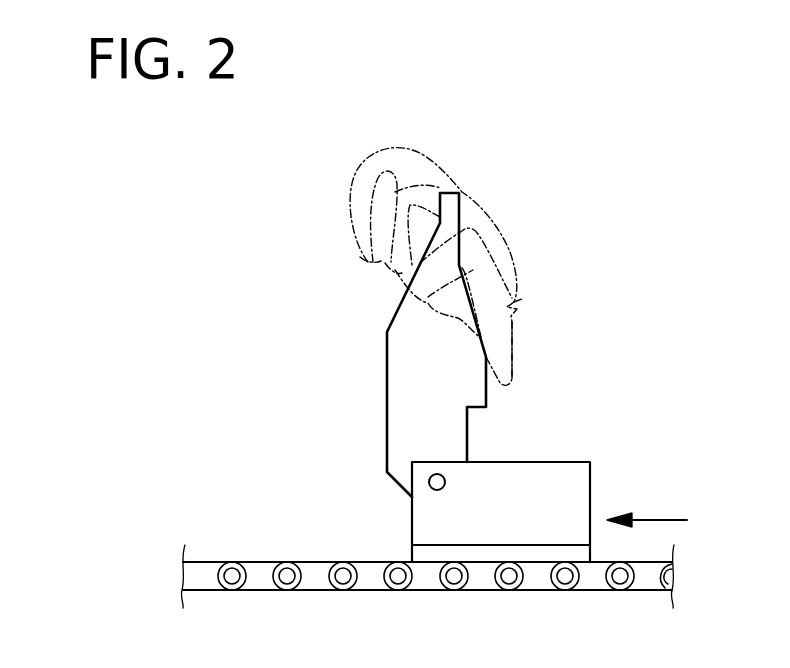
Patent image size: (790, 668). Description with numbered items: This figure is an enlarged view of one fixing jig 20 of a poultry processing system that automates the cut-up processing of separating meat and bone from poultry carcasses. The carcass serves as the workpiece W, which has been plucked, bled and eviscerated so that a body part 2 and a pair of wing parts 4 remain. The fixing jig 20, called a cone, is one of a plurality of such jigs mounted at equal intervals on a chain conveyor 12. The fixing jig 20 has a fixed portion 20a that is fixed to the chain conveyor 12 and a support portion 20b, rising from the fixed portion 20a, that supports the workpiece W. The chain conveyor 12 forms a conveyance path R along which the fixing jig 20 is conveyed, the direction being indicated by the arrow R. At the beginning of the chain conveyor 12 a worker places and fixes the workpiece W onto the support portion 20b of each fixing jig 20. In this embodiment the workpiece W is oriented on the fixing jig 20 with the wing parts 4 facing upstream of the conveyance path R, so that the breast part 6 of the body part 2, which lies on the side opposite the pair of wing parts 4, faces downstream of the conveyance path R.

The workpiece W is at (445, 257).
The body part 2 is at (445, 267).
The wing parts 4 is at (513, 327).
The breast part 6 is at (368, 253).
The chain conveyor 12 is at (292, 562).
The fixing jig 20 is at (456, 377).
The fixed portion 20a is at (543, 462).
The support portion 20b is at (387, 417).
The conveyance path R is at (647, 508).